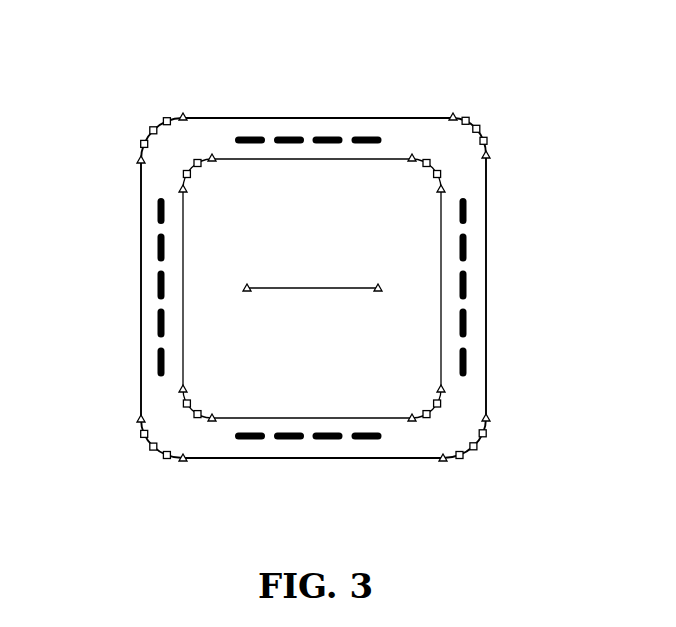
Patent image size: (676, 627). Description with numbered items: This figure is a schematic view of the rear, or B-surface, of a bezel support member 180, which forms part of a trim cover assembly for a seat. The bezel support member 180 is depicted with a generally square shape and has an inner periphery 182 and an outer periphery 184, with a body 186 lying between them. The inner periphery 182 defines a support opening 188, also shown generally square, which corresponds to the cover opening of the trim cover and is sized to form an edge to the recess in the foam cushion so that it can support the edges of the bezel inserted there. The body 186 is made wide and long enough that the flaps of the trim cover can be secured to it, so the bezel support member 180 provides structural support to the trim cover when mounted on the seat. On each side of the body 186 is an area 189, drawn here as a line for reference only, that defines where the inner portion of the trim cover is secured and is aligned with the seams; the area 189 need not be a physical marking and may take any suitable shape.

The bezel support member 180 is at (401, 80).
The inner periphery 182 is at (300, 418).
The outer periphery 184 is at (391, 470).
The body 186 is at (450, 153).
The support opening 188 is at (331, 234).
The area 189 is at (290, 138).